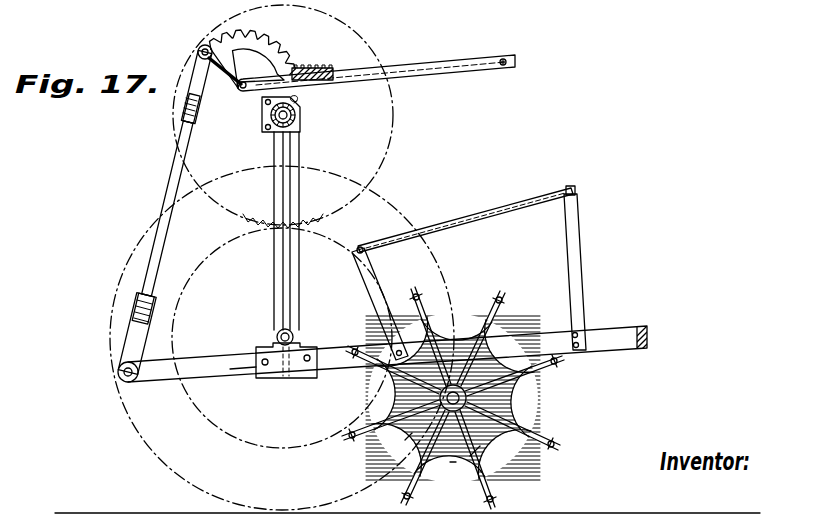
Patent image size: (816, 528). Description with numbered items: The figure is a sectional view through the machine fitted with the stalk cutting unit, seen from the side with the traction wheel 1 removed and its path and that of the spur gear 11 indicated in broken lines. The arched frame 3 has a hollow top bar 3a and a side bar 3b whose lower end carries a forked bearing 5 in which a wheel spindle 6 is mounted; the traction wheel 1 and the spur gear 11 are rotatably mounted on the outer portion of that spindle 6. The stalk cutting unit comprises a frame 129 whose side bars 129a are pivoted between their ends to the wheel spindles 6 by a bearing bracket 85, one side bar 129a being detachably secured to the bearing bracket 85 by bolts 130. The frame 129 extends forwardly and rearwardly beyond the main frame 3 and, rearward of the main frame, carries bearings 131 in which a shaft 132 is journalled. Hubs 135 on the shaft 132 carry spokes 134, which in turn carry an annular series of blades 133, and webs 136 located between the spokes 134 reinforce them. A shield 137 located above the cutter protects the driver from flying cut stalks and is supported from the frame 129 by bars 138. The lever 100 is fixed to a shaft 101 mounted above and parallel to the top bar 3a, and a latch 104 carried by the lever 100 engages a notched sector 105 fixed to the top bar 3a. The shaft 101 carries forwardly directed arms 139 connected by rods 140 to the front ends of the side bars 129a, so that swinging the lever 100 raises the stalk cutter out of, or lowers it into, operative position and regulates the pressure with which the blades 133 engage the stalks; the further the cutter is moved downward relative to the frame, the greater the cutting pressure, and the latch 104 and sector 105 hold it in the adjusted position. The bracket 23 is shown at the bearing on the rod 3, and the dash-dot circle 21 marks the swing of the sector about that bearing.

The traction wheel 1 is at (138, 437).
The arched frame 3 is at (300, 137).
The top bar 3a is at (297, 117).
The side bar 3b is at (294, 192).
The forked bearing 5 is at (278, 332).
The wheel spindle 6 is at (294, 334).
The spur gear 11 is at (340, 233).
The gear path circle 21 is at (398, 133).
The bearing bracket 23 is at (264, 123).
The bearing bracket 85 is at (262, 346).
The lever 100 is at (420, 63).
The shaft 101 is at (236, 88).
The latch 104 is at (310, 74).
The notched sector 105 is at (262, 53).
The frame 129 is at (650, 336).
The side bar 129a is at (240, 372).
The bolts 130 is at (261, 362).
The bearing 131 is at (452, 318).
The shaft 132 is at (518, 399).
The blade 133 is at (562, 440).
The spoke 134 is at (482, 448).
The hub 135 is at (410, 437).
The web 136 is at (464, 460).
The shield 137 is at (472, 214).
The bar 138 is at (578, 237).
The arm 139 is at (222, 67).
The rod 140 is at (170, 186).